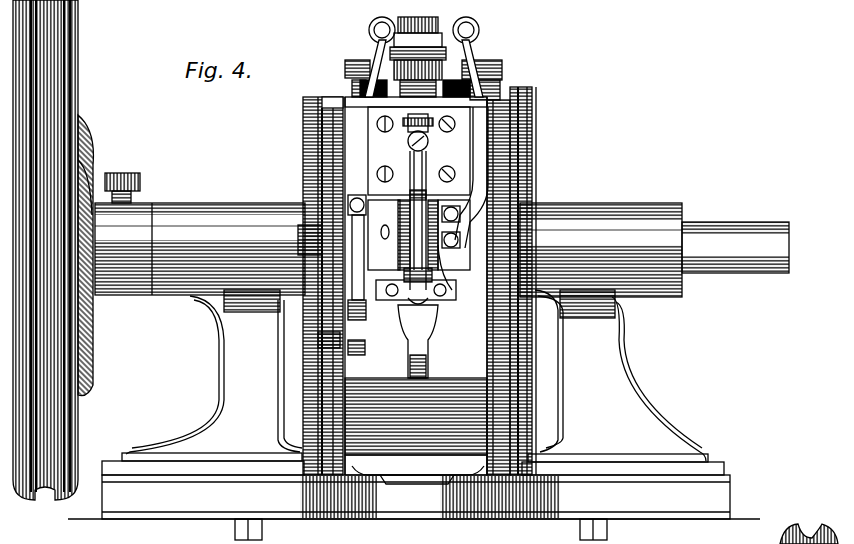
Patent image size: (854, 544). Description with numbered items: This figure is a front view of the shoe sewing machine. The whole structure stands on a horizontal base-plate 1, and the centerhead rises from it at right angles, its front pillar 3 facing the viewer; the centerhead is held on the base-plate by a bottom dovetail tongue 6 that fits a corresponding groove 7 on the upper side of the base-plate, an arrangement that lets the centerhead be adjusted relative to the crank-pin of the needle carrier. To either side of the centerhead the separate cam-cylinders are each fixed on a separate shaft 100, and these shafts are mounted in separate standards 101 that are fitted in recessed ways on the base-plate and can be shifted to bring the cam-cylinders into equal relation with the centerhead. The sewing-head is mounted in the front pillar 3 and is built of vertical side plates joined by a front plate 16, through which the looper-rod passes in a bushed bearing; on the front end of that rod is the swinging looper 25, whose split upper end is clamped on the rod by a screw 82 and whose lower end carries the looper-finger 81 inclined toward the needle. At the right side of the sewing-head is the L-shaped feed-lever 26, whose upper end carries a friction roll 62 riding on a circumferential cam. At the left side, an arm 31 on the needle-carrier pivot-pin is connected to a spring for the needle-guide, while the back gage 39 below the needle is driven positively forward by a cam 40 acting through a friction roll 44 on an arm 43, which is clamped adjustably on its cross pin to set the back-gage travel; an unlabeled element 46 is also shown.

The base-plate 1 is at (414, 507).
The front pillar 3 is at (440, 281).
The dovetail tongue 6 is at (418, 469).
The groove 7 is at (417, 488).
The front plate 16 is at (445, 149).
The looper 25 is at (412, 166).
The feed-lever 26 is at (475, 182).
The arm 31 is at (357, 221).
The back gage 39 is at (408, 305).
The cam 40 is at (346, 197).
The arm 43 is at (335, 288).
The friction roll 44 is at (300, 236).
The cam 46 is at (418, 341).
The friction roll 62 is at (500, 102).
The looper-finger 81 is at (390, 283).
The screw 82 is at (418, 126).
The shaft 100 is at (735, 247).
The standard 101 is at (388, 235).